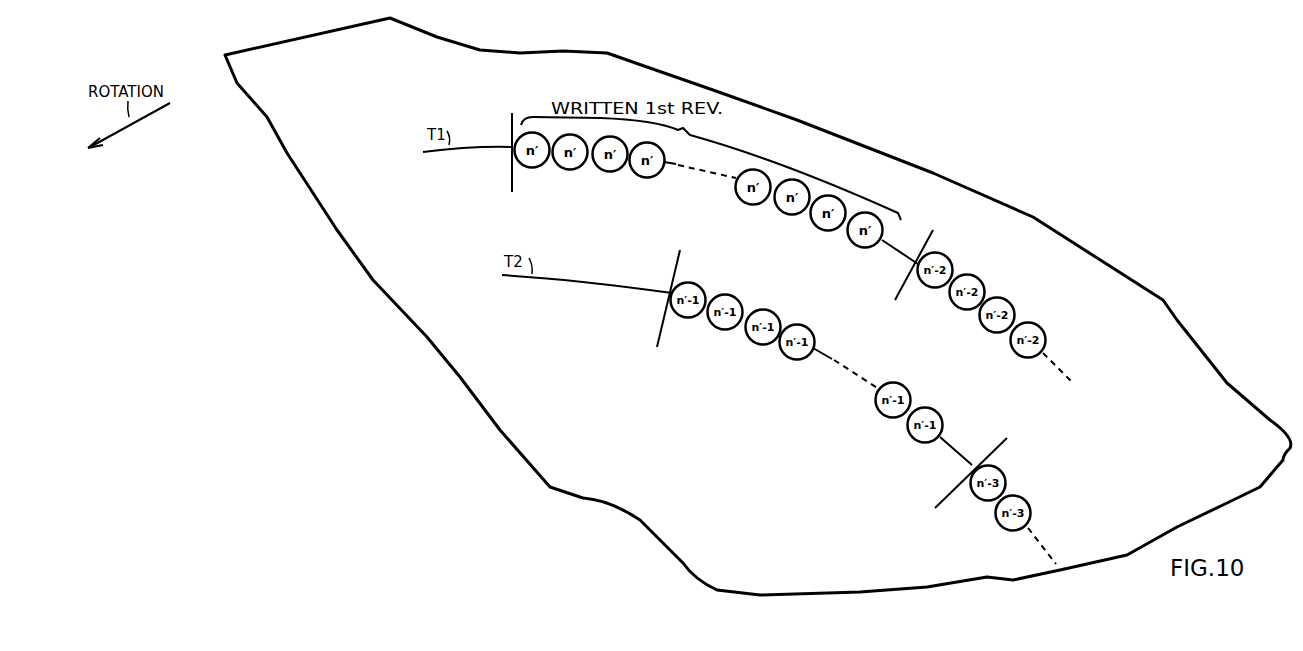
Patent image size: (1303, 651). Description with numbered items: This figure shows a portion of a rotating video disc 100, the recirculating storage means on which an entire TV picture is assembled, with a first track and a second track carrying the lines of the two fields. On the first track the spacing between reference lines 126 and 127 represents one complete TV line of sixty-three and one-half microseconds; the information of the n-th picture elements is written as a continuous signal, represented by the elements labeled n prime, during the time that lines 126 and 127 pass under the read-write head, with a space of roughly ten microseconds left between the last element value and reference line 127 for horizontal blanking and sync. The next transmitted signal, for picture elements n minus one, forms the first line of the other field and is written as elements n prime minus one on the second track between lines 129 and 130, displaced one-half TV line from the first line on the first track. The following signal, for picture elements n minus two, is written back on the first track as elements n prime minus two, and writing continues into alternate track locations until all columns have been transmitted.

The video disc 100 is at (280, 40).
The reference line 126 is at (513, 121).
The reference line 127 is at (938, 240).
The line 129 is at (658, 342).
The line 130 is at (943, 494).